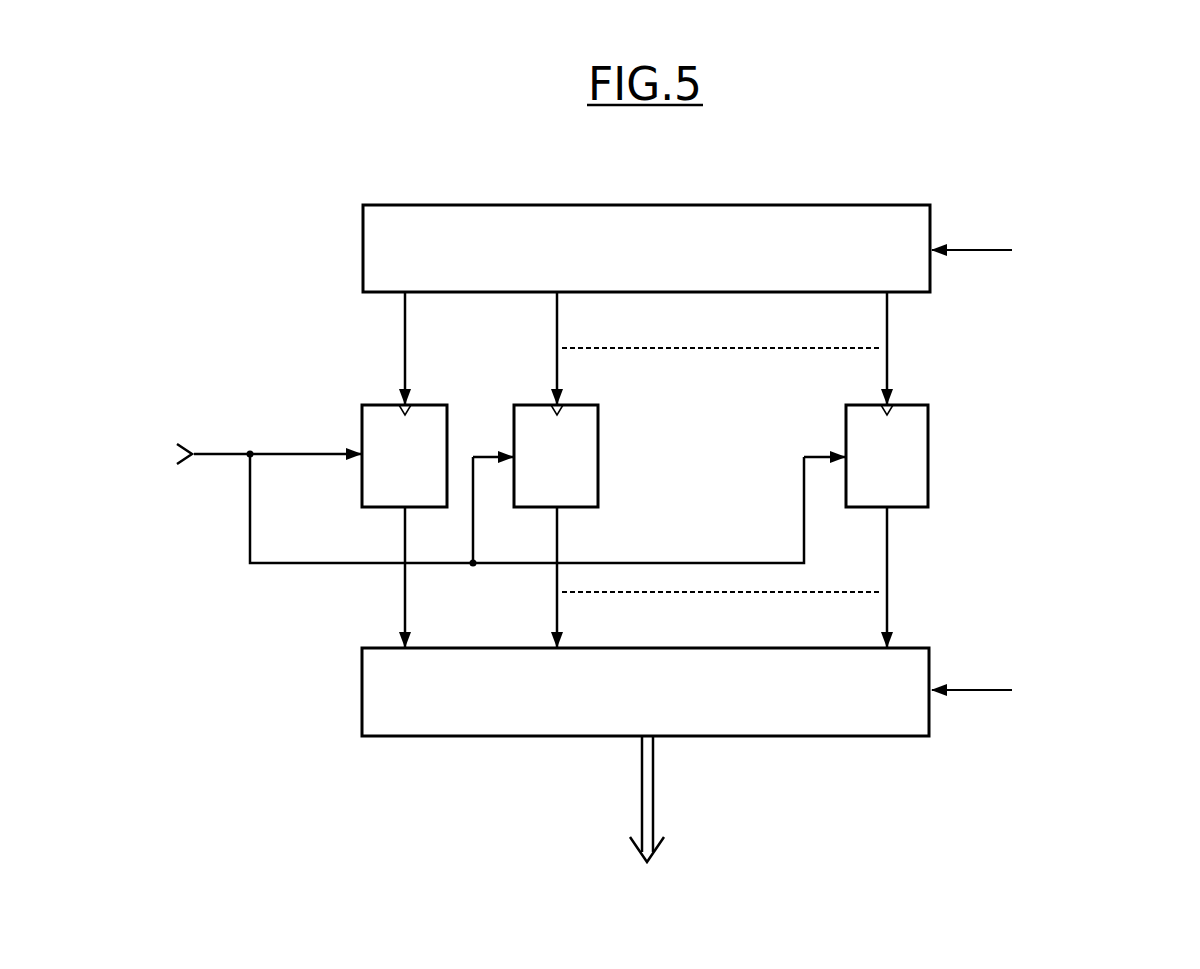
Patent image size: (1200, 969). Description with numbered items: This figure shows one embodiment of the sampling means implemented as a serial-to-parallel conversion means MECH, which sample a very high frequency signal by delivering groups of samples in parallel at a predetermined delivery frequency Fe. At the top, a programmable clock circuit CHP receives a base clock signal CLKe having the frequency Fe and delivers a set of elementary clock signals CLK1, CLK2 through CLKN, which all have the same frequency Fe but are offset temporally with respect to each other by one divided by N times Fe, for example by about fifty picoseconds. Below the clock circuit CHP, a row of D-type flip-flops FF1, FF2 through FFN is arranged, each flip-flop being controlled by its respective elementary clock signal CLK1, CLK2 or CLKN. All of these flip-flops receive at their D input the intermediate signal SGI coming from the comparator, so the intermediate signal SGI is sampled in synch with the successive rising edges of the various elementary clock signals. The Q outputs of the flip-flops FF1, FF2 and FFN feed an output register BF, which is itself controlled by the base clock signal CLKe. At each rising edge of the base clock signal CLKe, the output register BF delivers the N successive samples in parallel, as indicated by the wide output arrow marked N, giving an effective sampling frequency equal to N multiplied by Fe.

The serial-to-parallel conversion means MECH is at (1000, 180).
The programmable clock circuit CHP is at (646, 248).
The base clock signal CLKe is at (1004, 472).
The first elementary clock signal CLK1 is at (405, 333).
The second elementary clock signal CLK2 is at (557, 333).
The N-th elementary clock signal CLKN is at (887, 333).
The first D-type flip-flop FF1 is at (362, 415).
The second D-type flip-flop FF2 is at (598, 417).
The N-th D-type flip-flop FFN is at (928, 417).
The intermediate signal SGI is at (483, 504).
The output register BF is at (645, 692).
The number of parallel samples N is at (630, 802).